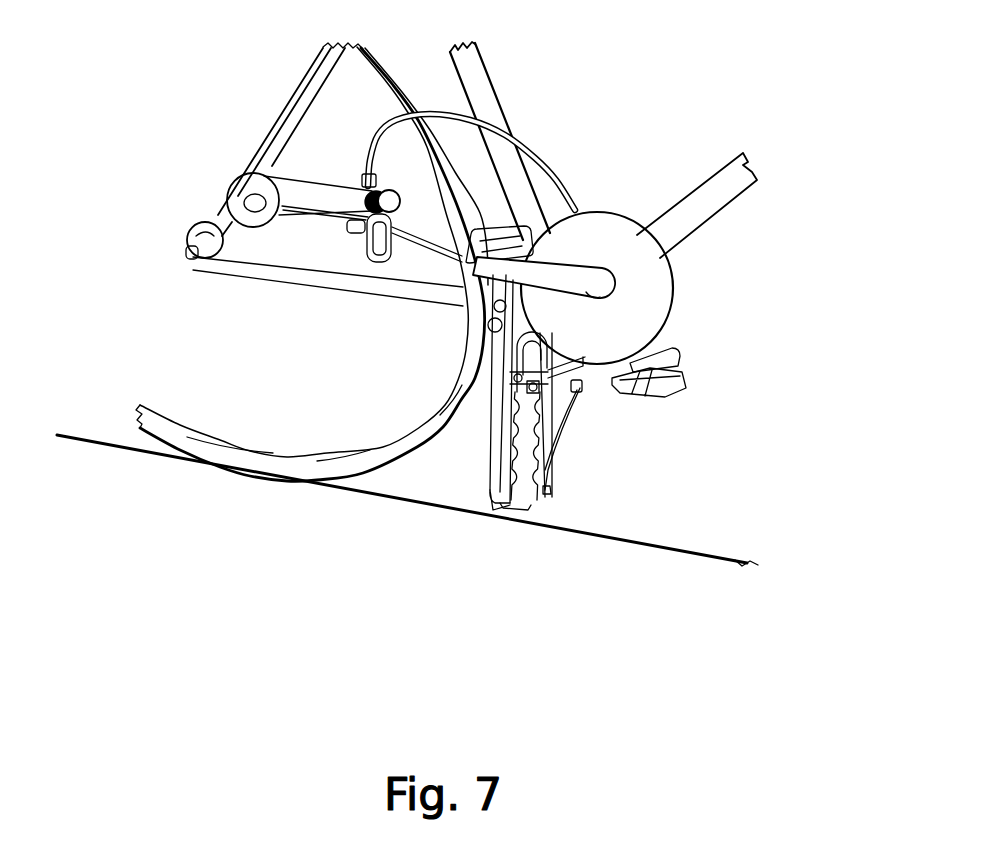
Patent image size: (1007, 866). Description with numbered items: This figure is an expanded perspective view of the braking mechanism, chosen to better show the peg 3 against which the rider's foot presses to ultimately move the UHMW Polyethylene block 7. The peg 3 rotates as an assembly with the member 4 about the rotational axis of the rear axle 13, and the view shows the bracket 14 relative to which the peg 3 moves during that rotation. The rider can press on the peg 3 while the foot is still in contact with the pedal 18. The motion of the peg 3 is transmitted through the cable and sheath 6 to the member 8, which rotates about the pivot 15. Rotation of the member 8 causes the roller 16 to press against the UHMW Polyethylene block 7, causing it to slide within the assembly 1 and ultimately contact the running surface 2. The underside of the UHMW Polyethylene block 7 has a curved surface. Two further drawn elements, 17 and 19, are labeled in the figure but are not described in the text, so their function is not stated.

The assembly 1 is at (493, 475).
The running surface 2 is at (572, 535).
The peg 3 is at (363, 177).
The member 4 is at (303, 188).
The cable and sheath 6 is at (547, 158).
The UHMW Polyethylene block 7 is at (502, 515).
The member 8 is at (577, 382).
The rear axle 13 is at (187, 238).
The bracket 14 is at (368, 245).
The pivot 15 is at (518, 378).
The roller 16 is at (513, 395).
The arch frame 17 is at (217, 467).
The pedal 18 is at (580, 205).
The curved strut 19 is at (547, 490).